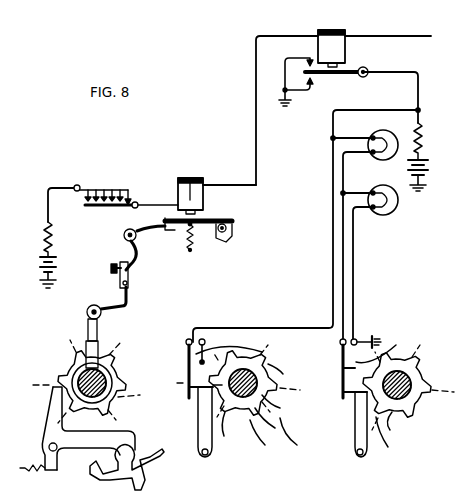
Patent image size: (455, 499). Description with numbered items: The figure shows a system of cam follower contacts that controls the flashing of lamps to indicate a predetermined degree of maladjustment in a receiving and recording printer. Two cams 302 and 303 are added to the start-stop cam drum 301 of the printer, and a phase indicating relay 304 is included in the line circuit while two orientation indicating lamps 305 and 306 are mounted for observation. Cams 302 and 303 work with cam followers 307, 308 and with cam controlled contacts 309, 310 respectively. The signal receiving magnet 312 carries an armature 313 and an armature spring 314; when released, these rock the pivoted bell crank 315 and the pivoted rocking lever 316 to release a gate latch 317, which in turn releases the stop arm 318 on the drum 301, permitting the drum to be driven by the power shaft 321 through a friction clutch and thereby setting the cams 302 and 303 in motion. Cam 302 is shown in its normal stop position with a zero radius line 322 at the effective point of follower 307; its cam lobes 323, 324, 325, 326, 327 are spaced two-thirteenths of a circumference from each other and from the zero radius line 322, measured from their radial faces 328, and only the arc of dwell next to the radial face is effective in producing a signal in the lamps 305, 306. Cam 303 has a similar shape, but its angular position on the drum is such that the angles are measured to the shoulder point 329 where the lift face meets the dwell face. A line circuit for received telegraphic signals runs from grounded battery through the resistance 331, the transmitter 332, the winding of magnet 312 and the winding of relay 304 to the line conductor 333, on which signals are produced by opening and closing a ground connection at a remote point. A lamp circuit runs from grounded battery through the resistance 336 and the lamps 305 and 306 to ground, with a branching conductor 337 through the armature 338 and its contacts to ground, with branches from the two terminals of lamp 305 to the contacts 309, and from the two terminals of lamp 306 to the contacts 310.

The start-stop cam drum 301 is at (80, 378).
The cam 302 is at (275, 428).
The cam 303 is at (388, 447).
The phase indicating relay 304 is at (337, 47).
The orientation indicating lamp 305 is at (390, 160).
The orientation indicating lamp 306 is at (393, 214).
The cam follower 307 is at (212, 440).
The cam follower 308 is at (364, 440).
The cam controlled contacts 309 is at (198, 362).
The cam controlled contacts 310 is at (396, 345).
The signal receiving magnet 312 is at (192, 182).
The armature 313 is at (208, 222).
The armature spring 314 is at (195, 240).
The pivoted bell crank 315 is at (155, 237).
The pivoted rocking lever 316 is at (130, 286).
The gate latch 317 is at (110, 312).
The stop arm 318 is at (82, 348).
The power shaft 321 is at (72, 378).
The zero radius line 322 is at (190, 373).
The cam lobe 323 is at (224, 436).
The cam lobe 324 is at (265, 445).
The cam lobe 325 is at (280, 408).
The cam lobe 326 is at (283, 374).
The cam lobe 327 is at (277, 350).
The radial face 328 is at (297, 445).
The shoulder point 329 is at (401, 426).
The resistance 331 is at (54, 233).
The transmitter 332 is at (129, 190).
The line conductor 333 is at (375, 36).
The resistance 336 is at (422, 142).
The branching conductor 337 is at (418, 102).
The armature 338 is at (342, 76).